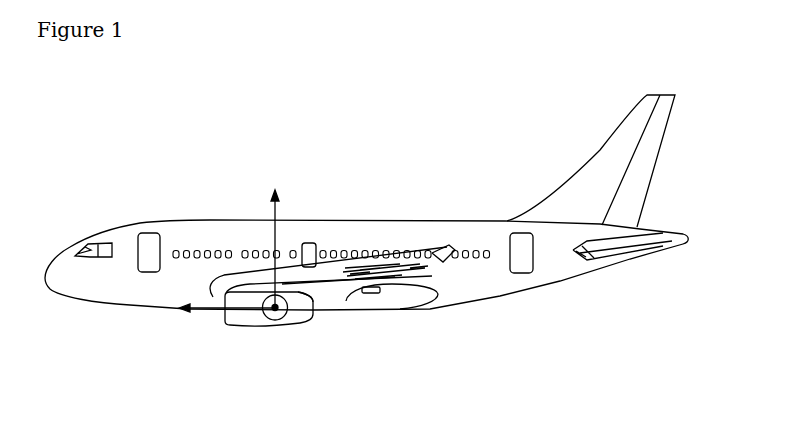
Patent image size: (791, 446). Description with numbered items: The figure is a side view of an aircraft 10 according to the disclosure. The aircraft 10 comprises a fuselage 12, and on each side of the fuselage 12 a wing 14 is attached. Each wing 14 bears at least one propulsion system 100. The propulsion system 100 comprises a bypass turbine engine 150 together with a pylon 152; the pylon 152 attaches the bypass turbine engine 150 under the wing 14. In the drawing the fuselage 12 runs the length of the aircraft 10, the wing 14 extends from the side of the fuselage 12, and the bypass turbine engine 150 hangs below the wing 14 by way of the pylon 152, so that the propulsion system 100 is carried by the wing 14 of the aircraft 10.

The aircraft 10 is at (479, 164).
The fuselage 12 is at (557, 276).
The wing 14 is at (408, 260).
The propulsion system 100 is at (230, 343).
The bypass turbine engine 150 is at (293, 313).
The pylon 152 is at (320, 292).